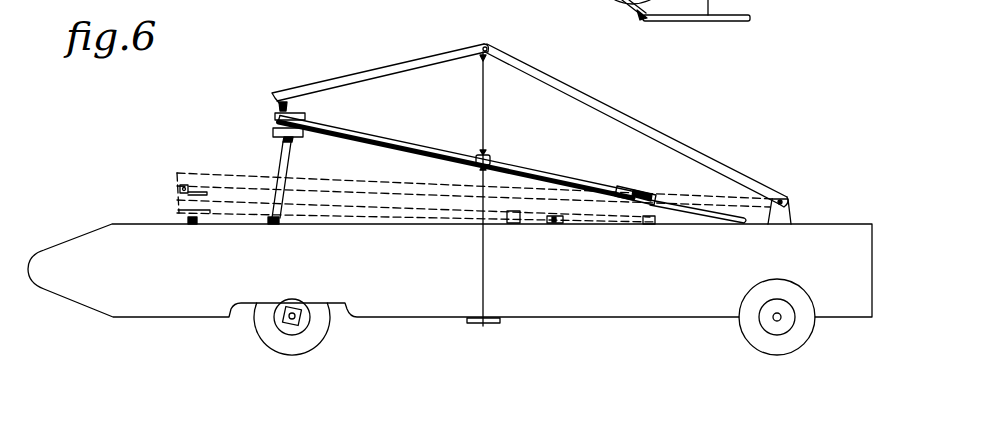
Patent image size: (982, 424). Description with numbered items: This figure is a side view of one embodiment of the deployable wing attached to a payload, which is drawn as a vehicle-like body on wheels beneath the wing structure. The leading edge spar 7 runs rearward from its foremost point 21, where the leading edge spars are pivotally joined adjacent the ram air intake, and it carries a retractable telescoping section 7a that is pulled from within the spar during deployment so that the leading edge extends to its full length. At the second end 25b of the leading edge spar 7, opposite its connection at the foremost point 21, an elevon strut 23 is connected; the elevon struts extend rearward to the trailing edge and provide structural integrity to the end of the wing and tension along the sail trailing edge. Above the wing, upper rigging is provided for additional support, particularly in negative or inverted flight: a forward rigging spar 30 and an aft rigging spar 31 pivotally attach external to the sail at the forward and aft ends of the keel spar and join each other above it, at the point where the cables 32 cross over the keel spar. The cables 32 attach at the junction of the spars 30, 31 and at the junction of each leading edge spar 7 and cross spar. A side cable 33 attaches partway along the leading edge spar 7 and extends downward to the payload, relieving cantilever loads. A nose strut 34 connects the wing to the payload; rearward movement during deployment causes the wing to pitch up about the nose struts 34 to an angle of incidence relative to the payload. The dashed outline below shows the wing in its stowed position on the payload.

The leading edge spar 7 is at (401, 143).
The telescoping section 7a is at (562, 175).
The foremost point 21 is at (296, 113).
The elevon strut 23 is at (717, 216).
The second end 25b is at (649, 205).
The forward rigging spar 30 is at (428, 61).
The aft rigging spar 31 is at (652, 136).
The cable 32 is at (488, 134).
The side cable 33 is at (483, 300).
The nose strut 34 is at (278, 170).